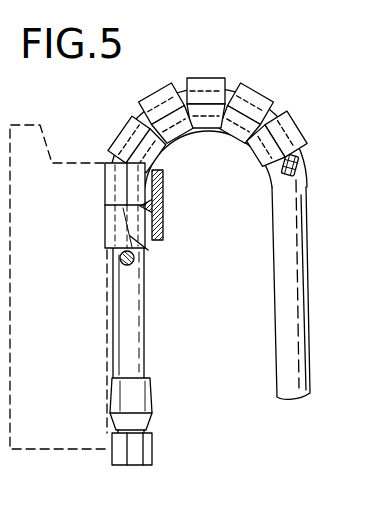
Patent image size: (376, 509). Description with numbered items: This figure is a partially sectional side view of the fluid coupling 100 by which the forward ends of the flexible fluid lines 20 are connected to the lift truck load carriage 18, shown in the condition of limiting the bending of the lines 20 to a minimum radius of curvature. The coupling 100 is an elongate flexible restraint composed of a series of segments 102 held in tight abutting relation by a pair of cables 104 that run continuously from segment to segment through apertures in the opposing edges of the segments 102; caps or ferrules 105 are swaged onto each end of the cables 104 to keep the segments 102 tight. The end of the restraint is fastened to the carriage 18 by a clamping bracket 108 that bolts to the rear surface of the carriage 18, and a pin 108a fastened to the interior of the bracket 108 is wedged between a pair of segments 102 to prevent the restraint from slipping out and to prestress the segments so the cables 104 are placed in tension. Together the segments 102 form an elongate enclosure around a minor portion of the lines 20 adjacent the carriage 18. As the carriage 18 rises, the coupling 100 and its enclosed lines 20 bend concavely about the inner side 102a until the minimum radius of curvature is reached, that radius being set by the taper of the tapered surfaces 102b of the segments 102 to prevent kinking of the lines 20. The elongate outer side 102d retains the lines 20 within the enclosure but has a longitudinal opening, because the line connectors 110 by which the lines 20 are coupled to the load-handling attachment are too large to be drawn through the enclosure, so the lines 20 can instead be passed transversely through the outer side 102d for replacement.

The lift truck load carriage 18 is at (54, 286).
The flexible fluid lines 20 is at (302, 279).
The fluid coupling 100 is at (206, 58).
The segments 102 is at (139, 101).
The inner side of the coupling 102a is at (188, 133).
The tapered surfaces 102b is at (229, 150).
The outer side of the coupling 102d is at (218, 78).
The cables 104 is at (148, 250).
The ferrules 105 is at (297, 166).
The clamping bracket 108 is at (163, 215).
The pin 108a is at (165, 201).
The line connectors 110 is at (152, 450).